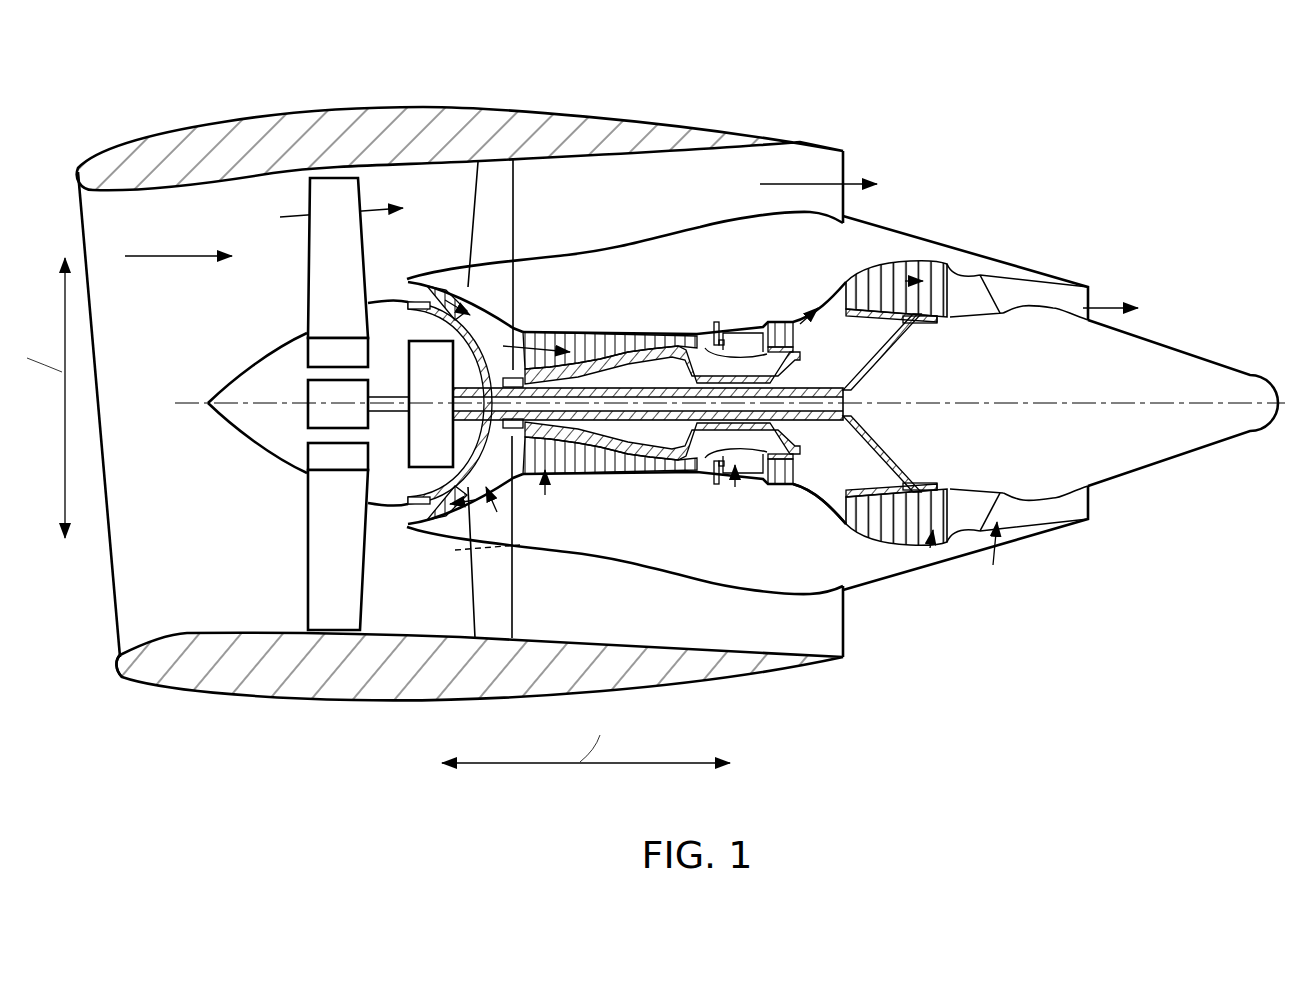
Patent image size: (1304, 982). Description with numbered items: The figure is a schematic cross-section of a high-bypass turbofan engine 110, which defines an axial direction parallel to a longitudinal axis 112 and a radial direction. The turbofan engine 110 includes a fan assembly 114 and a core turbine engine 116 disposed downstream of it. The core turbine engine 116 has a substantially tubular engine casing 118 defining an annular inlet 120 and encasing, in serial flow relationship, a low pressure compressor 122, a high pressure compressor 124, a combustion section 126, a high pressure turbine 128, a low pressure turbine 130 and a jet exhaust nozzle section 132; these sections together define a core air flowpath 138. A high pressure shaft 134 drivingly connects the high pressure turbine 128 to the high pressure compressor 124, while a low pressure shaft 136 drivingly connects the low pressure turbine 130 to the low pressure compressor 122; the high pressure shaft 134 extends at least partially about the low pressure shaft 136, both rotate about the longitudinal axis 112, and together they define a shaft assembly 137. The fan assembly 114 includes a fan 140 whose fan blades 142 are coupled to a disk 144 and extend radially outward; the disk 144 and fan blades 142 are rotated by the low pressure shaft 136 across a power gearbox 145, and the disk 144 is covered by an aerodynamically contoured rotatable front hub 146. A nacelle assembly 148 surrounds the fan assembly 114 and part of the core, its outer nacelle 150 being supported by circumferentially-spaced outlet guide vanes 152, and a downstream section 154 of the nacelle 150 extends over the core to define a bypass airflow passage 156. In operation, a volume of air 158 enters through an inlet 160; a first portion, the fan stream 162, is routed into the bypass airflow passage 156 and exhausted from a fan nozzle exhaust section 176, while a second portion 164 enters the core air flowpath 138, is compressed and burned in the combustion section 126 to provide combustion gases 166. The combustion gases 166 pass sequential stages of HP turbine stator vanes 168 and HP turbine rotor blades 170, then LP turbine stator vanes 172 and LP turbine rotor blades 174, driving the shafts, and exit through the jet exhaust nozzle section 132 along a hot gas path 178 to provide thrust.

The turbofan engine 110 is at (800, 84).
The longitudinal axis 112 is at (1013, 395).
The fan assembly 114 is at (218, 208).
The core turbine engine 116 is at (723, 258).
The engine casing 118 is at (690, 585).
The annular inlet 120 is at (418, 518).
The low pressure compressor 122 is at (470, 530).
The high pressure compressor 124 is at (545, 495).
The combustion section 126 is at (716, 486).
The high pressure turbine 128 is at (800, 481).
The low pressure turbine 130 is at (935, 567).
The jet exhaust nozzle section 132 is at (1000, 542).
The high pressure shaft 134 is at (778, 368).
The low pressure shaft 136 is at (858, 388).
The shaft assembly 137 is at (868, 422).
The core air flowpath 138 is at (497, 512).
The fan 140 is at (262, 455).
The fan blades 142 is at (305, 555).
The disk 144 is at (302, 352).
The power gearbox 145 is at (495, 330).
The front hub 146 is at (215, 420).
The nacelle assembly 148 is at (828, 672).
The nacelle 150 is at (340, 702).
The outlet guide vanes 152 is at (520, 203).
The downstream section 154 is at (810, 118).
The bypass airflow passage 156 is at (690, 201).
The volume of air 158 is at (170, 250).
The inlet 160 is at (112, 650).
The fan stream 162 is at (305, 211).
The second portion of air 164 is at (430, 286).
The combustion gases 166 is at (757, 322).
The HP turbine stator vanes 168 is at (735, 495).
The HP turbine rotor blades 170 is at (782, 455).
The LP turbine stator vanes 172 is at (838, 505).
The LP turbine rotor blades 174 is at (858, 540).
The fan nozzle exhaust section 176 is at (845, 165).
The hot gas path 178 is at (826, 288).